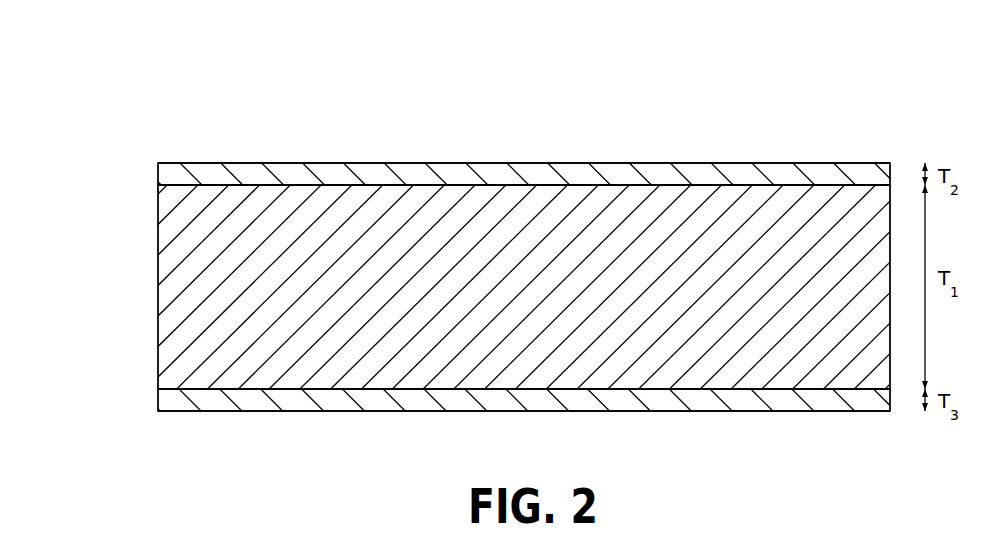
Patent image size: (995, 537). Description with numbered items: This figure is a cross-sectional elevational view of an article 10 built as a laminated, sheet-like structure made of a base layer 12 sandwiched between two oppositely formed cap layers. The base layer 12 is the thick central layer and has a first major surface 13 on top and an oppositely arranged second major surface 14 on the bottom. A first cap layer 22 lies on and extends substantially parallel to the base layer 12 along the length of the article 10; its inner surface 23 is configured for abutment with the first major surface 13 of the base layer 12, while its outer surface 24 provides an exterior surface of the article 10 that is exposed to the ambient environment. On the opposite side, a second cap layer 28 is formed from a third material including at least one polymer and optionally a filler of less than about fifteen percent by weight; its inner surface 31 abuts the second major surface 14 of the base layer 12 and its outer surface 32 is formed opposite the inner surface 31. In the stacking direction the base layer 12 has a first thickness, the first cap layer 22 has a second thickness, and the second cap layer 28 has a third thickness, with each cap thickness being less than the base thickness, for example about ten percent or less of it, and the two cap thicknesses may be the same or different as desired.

The article 10 is at (184, 94).
The base layer 12 is at (156, 289).
The first major surface 13 is at (293, 187).
The second major surface 14 is at (253, 390).
The first cap layer 22 is at (157, 175).
The inner surface 23 is at (343, 188).
The outer surface 24 is at (327, 163).
The second cap layer 28 is at (156, 400).
The inner surface 31 is at (328, 388).
The outer surface 32 is at (310, 412).